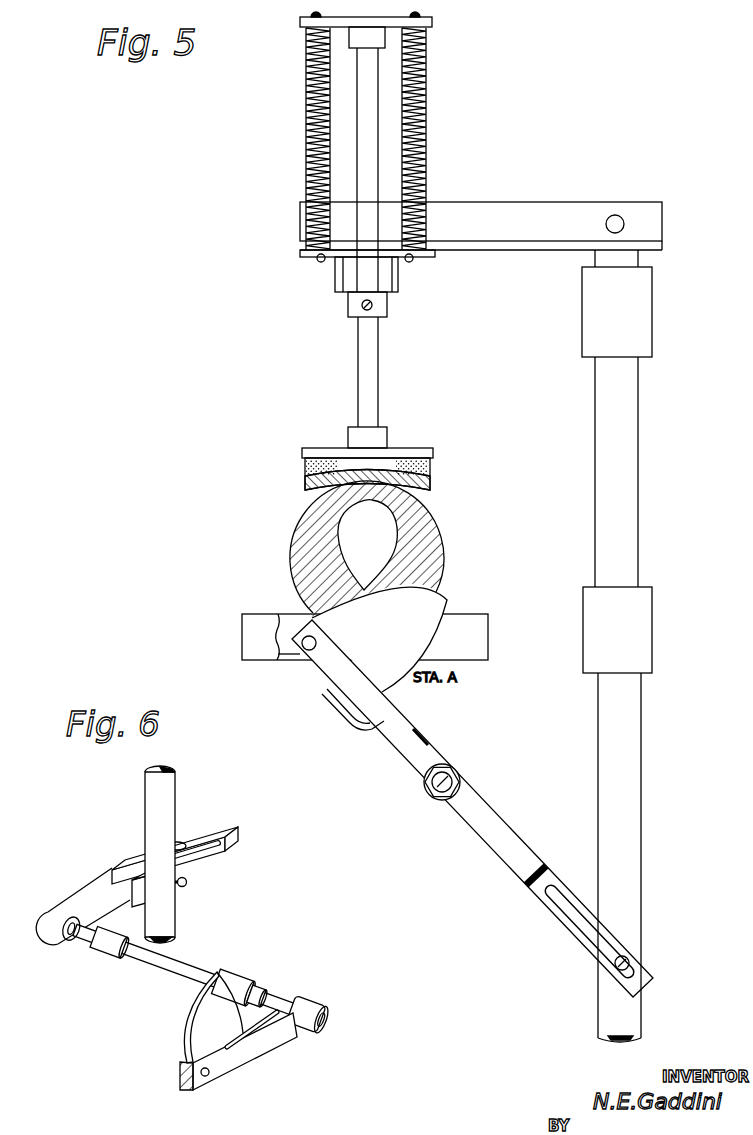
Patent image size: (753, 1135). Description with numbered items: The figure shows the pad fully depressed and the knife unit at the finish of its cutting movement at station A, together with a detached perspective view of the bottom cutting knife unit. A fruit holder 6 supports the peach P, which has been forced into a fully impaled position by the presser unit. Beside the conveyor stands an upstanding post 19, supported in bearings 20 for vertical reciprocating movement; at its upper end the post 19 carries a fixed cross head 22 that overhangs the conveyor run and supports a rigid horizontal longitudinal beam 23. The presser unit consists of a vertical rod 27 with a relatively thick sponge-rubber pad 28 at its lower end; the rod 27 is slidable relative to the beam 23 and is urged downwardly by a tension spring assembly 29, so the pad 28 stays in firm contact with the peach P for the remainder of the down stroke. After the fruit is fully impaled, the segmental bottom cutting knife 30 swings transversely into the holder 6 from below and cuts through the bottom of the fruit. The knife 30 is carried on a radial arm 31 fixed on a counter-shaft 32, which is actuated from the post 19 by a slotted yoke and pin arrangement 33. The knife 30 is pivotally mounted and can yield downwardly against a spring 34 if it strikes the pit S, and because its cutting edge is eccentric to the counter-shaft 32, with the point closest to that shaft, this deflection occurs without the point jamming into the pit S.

In FIG. 5, the fruit holder 6 is at (488, 627).
In FIG. 5, the upstanding post 19 is at (634, 524).
In FIG. 6, the upstanding post 19 is at (165, 800).
In FIG. 5, the bearings 20 is at (645, 330).
In FIG. 5, the cross head 22 is at (493, 218).
In FIG. 5, the longitudinal beam 23 is at (340, 275).
In FIG. 5, the vertical rod 27 is at (376, 358).
In FIG. 5, the pad 28 is at (398, 457).
In FIG. 5, the tension spring assembly 29 is at (402, 128).
In FIG. 5, the bottom cutting knife 30 is at (400, 608).
In FIG. 6, the bottom cutting knife 30 is at (213, 1018).
In FIG. 5, the radial arm 31 is at (390, 723).
In FIG. 6, the radial arm 31 is at (238, 1056).
In FIG. 5, the counter-shaft 32 is at (449, 778).
In FIG. 6, the counter-shaft 32 is at (182, 966).
In FIG. 5, the slotted yoke and pin arrangement 33 is at (603, 937).
In FIG. 6, the slotted yoke and pin arrangement 33 is at (188, 883).
In FIG. 5, the spring 34 is at (333, 708).
In FIG. 5, the peach P is at (377, 549).
In FIG. 5, the pit S is at (370, 534).